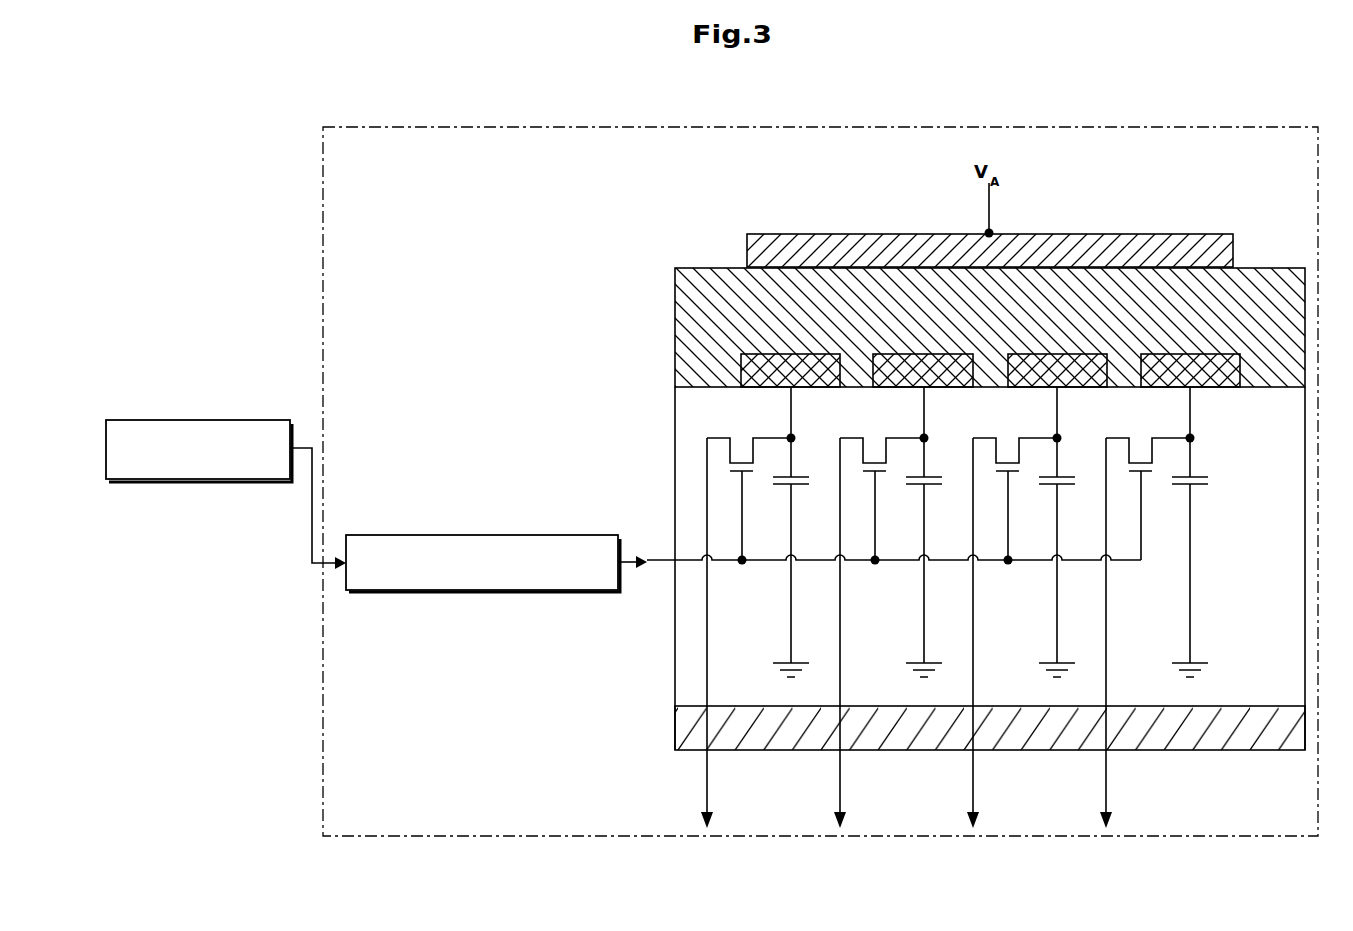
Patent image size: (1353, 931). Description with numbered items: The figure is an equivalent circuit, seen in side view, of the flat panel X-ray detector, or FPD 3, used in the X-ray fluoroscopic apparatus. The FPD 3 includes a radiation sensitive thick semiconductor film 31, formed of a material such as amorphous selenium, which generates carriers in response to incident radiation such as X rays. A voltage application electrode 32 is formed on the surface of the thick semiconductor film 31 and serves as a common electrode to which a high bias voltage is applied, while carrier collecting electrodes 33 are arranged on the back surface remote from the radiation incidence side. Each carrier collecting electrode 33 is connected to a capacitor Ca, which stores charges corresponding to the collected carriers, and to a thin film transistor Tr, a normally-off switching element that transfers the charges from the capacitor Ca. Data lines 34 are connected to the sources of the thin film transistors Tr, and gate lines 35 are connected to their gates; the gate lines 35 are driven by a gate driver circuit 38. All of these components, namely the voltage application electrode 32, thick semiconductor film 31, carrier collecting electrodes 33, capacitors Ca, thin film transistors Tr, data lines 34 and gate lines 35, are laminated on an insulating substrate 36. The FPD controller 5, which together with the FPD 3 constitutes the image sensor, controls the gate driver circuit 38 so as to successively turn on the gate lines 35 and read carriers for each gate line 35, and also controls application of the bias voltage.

The FPD 3 is at (829, 157).
The FPD controller 5 is at (203, 479).
The thick semiconductor film 31 is at (683, 322).
The voltage application electrode 32 is at (958, 233).
The carrier collecting electrodes 33 is at (752, 378).
The data lines 34 is at (707, 800).
The gate lines 35 is at (663, 562).
The insulating substrate 36 is at (1255, 730).
The gate driver circuit 38 is at (547, 590).
The thin film transistors Tr is at (740, 430).
The capacitors Ca is at (810, 483).